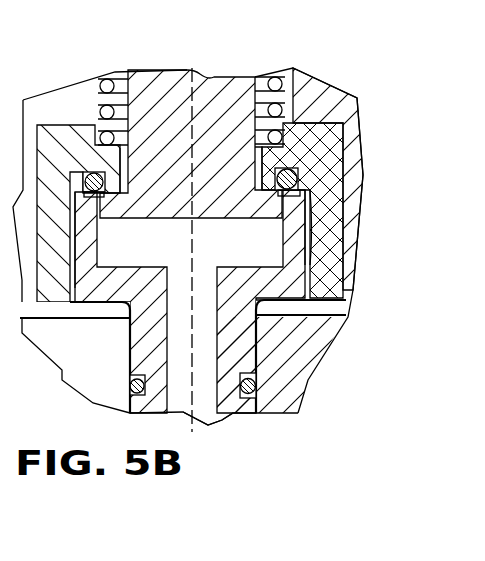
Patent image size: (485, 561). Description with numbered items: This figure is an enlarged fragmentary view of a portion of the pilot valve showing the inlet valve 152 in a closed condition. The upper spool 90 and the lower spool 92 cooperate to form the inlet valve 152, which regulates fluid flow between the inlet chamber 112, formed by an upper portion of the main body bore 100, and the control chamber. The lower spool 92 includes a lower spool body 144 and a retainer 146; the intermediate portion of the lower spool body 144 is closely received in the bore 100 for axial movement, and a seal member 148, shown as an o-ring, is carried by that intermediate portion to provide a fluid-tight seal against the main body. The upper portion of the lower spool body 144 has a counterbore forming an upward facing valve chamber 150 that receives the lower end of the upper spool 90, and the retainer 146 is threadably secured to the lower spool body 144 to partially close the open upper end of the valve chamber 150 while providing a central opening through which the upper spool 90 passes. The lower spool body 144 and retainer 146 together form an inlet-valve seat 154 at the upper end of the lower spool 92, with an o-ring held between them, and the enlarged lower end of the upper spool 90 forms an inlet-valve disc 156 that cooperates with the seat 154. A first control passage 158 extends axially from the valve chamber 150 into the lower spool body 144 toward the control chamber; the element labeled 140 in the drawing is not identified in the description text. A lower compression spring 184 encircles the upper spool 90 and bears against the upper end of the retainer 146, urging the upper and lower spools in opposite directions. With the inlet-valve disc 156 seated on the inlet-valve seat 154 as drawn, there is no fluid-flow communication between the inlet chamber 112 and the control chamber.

The upper spool 90 is at (208, 76).
The lower compression spring 184 is at (277, 78).
The inlet chamber 112 is at (77, 121).
The inlet-valve seat 154 is at (289, 172).
The inlet valve 152 is at (298, 174).
The inlet-valve disc 156 is at (283, 200).
The valve chamber 150 is at (275, 251).
The retainer 146 is at (350, 273).
The bore 100 is at (254, 334).
The first control passage 158 is at (206, 335).
The valve stem 140 is at (256, 365).
The seal member 148 is at (257, 390).
The lower spool body 144 is at (104, 400).
The lower spool 92 is at (237, 416).